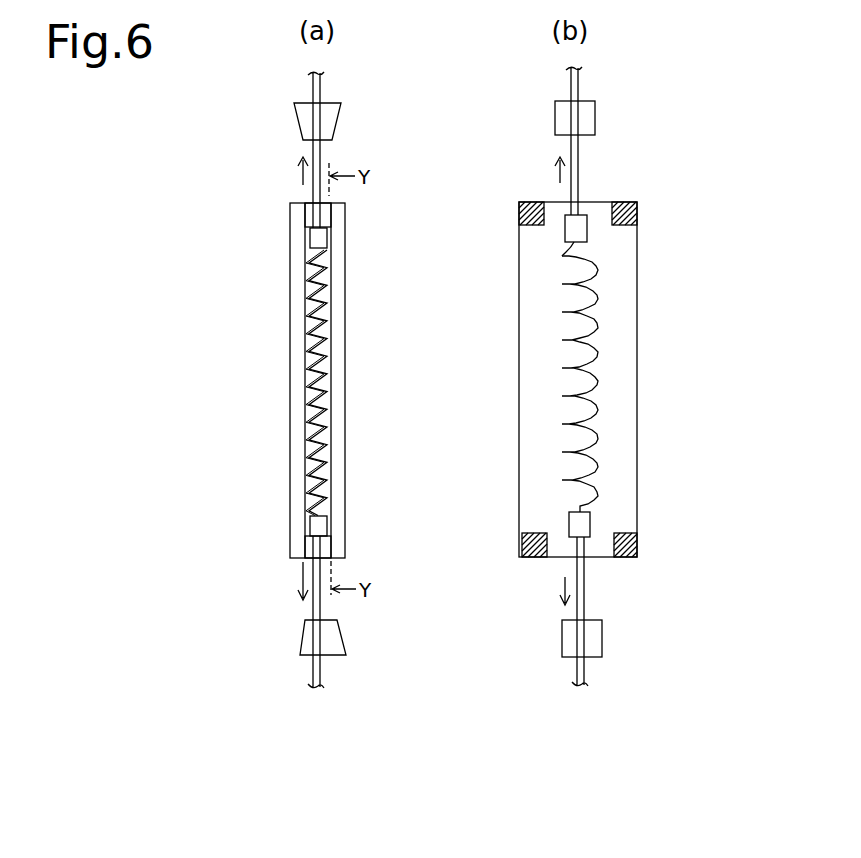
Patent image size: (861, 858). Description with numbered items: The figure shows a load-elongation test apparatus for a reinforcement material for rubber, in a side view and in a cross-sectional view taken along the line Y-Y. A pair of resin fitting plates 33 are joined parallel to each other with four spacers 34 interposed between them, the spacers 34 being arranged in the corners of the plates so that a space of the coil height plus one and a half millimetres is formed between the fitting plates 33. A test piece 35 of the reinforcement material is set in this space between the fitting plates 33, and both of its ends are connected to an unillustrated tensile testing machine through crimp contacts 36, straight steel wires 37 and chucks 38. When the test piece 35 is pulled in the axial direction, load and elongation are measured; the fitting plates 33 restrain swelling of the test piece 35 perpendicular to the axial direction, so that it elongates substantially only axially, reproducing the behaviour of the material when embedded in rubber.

The resin fitting plates 33 is at (340, 290).
The spacers 34 is at (325, 212).
The test piece 35 is at (325, 368).
The crimp contacts 36 is at (320, 243).
The straight steel wires 37 is at (322, 152).
The chucks 38 is at (330, 107).